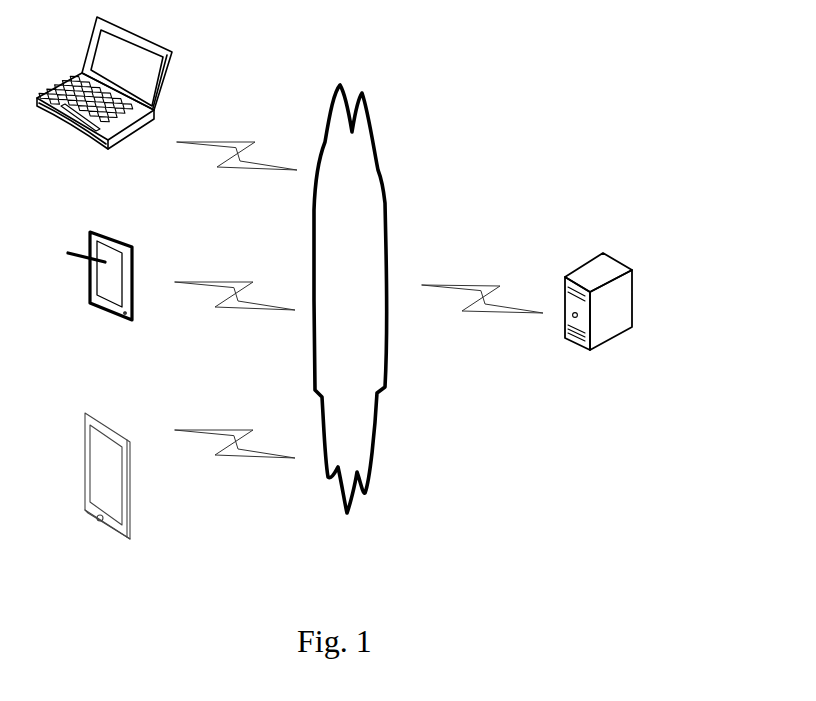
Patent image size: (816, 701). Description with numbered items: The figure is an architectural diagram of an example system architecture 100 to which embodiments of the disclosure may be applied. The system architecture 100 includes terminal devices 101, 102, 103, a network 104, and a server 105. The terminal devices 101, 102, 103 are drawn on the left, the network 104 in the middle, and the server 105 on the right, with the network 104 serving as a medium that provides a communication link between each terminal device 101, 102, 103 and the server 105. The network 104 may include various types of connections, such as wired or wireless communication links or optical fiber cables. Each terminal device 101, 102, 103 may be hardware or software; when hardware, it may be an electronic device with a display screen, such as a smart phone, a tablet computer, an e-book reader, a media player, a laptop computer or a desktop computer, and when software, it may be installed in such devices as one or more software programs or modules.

The system architecture 100 is at (625, 65).
The terminal device 101 is at (108, 496).
The terminal device 102 is at (100, 296).
The terminal device 103 is at (104, 103).
The network 104 is at (350, 299).
The server 105 is at (598, 324).